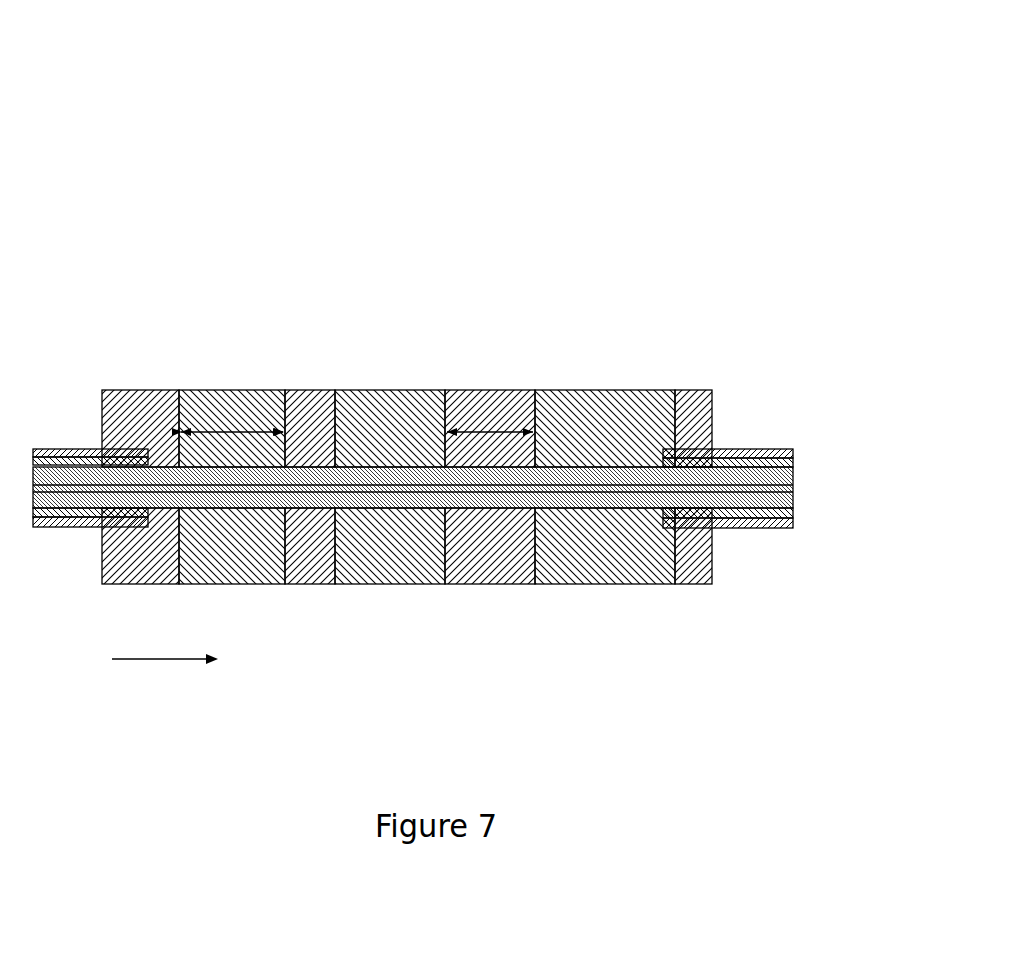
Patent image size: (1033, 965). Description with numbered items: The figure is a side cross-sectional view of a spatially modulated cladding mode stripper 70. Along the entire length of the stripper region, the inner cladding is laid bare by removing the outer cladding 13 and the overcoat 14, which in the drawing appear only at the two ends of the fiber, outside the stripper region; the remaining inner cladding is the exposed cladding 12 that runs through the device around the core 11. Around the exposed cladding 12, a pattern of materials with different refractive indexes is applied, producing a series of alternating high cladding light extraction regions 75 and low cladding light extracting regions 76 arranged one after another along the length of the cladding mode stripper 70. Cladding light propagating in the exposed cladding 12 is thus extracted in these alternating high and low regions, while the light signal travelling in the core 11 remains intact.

The spatially modulated cladding mode stripper 70 is at (153, 145).
The high cladding light extraction regions 75 is at (144, 391).
The low cladding light extracting regions 76 is at (234, 391).
The overcoat 14 is at (795, 452).
The outer cladding 13 is at (795, 467).
The exposed cladding 12 is at (612, 500).
The core 11 is at (390, 490).